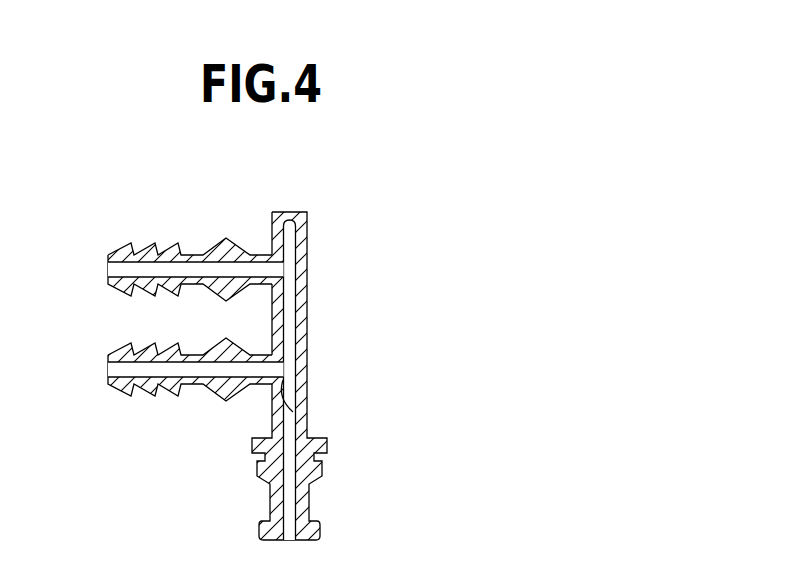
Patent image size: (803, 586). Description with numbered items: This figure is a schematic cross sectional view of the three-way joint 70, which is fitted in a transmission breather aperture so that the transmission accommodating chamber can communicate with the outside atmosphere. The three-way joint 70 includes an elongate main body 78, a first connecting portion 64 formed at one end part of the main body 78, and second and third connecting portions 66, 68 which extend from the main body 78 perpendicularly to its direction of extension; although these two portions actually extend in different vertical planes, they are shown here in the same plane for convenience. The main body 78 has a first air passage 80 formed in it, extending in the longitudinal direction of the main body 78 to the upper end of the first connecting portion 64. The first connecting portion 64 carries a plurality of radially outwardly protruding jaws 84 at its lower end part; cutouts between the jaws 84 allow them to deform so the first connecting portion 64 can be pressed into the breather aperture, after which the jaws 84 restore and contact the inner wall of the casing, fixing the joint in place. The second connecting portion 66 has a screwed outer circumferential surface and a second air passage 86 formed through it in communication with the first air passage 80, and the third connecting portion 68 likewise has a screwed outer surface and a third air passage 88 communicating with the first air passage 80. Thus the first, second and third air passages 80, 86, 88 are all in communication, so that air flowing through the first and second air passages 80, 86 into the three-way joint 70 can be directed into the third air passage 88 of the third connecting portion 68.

The three-way joint 70 is at (339, 191).
The main body 78 is at (325, 331).
The first air passage 80 is at (288, 387).
The third connecting portion 68 is at (196, 235).
The third air passage 88 is at (135, 262).
The second connecting portion 66 is at (175, 376).
The second air passage 86 is at (141, 364).
The first connecting portion 64 is at (271, 553).
The jaws 84 is at (262, 527).